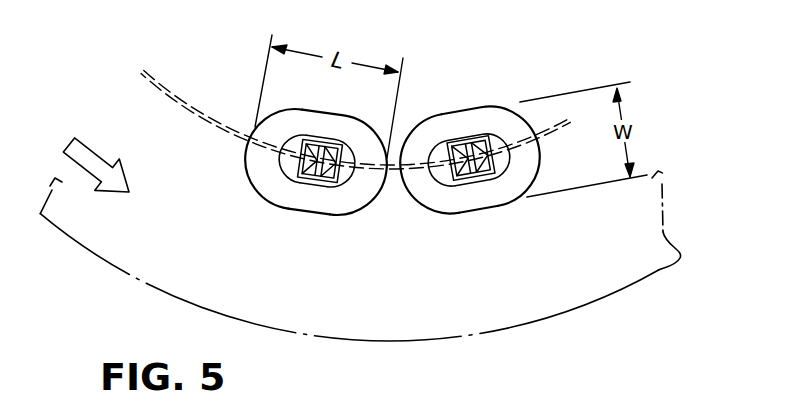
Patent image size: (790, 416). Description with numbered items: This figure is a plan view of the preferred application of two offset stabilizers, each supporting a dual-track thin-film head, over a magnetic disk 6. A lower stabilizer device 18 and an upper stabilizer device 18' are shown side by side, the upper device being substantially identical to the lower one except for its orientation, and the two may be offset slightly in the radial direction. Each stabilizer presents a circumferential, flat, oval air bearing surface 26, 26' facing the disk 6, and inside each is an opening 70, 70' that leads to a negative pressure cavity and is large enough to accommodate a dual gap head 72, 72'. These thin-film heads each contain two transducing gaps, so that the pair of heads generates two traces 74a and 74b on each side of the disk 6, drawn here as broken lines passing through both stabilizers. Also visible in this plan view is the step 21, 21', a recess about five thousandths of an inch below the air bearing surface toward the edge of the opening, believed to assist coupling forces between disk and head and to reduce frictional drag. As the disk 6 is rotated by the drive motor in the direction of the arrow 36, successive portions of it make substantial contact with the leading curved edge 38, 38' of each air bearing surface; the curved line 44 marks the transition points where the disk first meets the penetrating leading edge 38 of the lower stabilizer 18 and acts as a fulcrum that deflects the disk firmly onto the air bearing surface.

The disk 6 is at (563, 280).
The lower stabilizer device 18 is at (314, 254).
The upper stabilizer device 18' is at (490, 255).
The step 21 is at (309, 219).
The step 21' is at (465, 210).
The air bearing surface 26 is at (340, 147).
The air bearing surface 26' is at (495, 143).
The arrow 36 is at (88, 162).
The leading curved edge 38 is at (260, 165).
The leading curved edge 38' is at (425, 192).
The curved line 44 is at (292, 168).
The opening 70 is at (329, 131).
The opening 70' is at (472, 127).
The dual gap head 72 is at (315, 127).
The dual gap head 72' is at (452, 127).
The trace 74a is at (212, 128).
The trace 74b is at (205, 108).